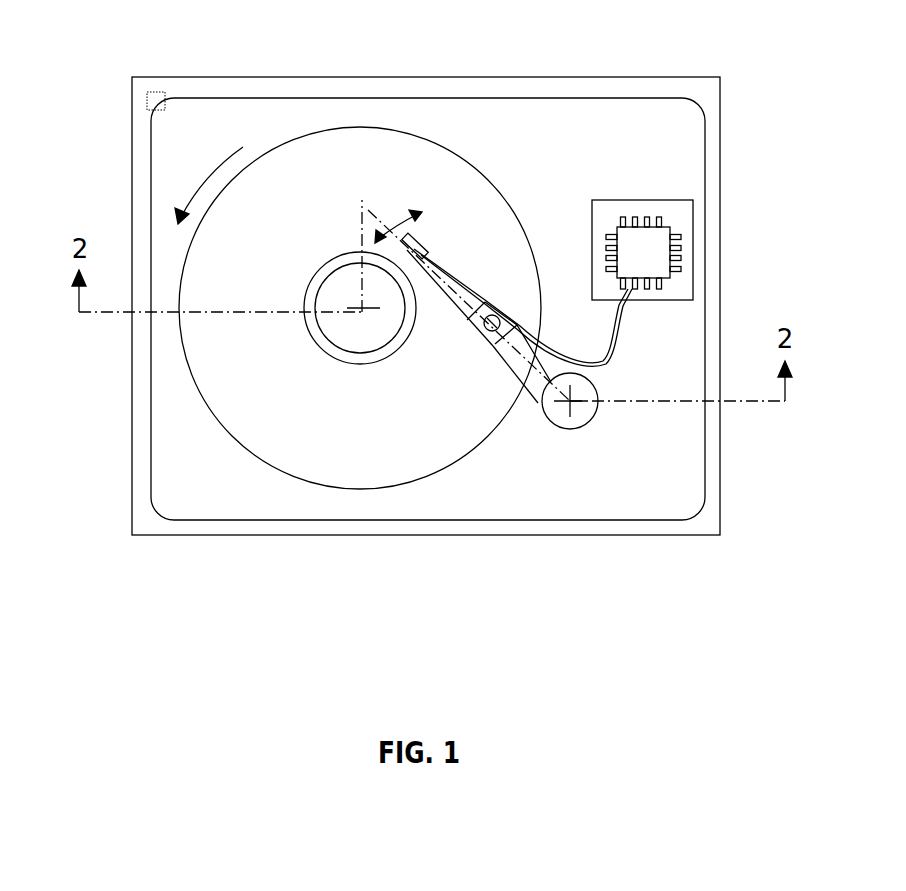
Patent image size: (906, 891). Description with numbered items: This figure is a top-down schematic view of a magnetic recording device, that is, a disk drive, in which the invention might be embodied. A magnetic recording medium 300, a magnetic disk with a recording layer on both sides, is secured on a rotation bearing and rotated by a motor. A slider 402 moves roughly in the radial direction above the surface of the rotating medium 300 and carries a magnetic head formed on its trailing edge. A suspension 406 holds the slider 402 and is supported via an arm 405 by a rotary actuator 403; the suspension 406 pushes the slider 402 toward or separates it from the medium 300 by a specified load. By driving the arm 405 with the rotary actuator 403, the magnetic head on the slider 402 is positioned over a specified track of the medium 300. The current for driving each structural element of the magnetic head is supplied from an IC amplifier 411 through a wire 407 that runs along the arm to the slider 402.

The magnetic recording medium 300 is at (357, 132).
The slider 402 is at (425, 232).
The rotary actuator 403 is at (562, 428).
The arm 405 is at (505, 360).
The suspension 406 is at (447, 303).
The wire 407 is at (630, 320).
The IC amplifier 411 is at (667, 226).